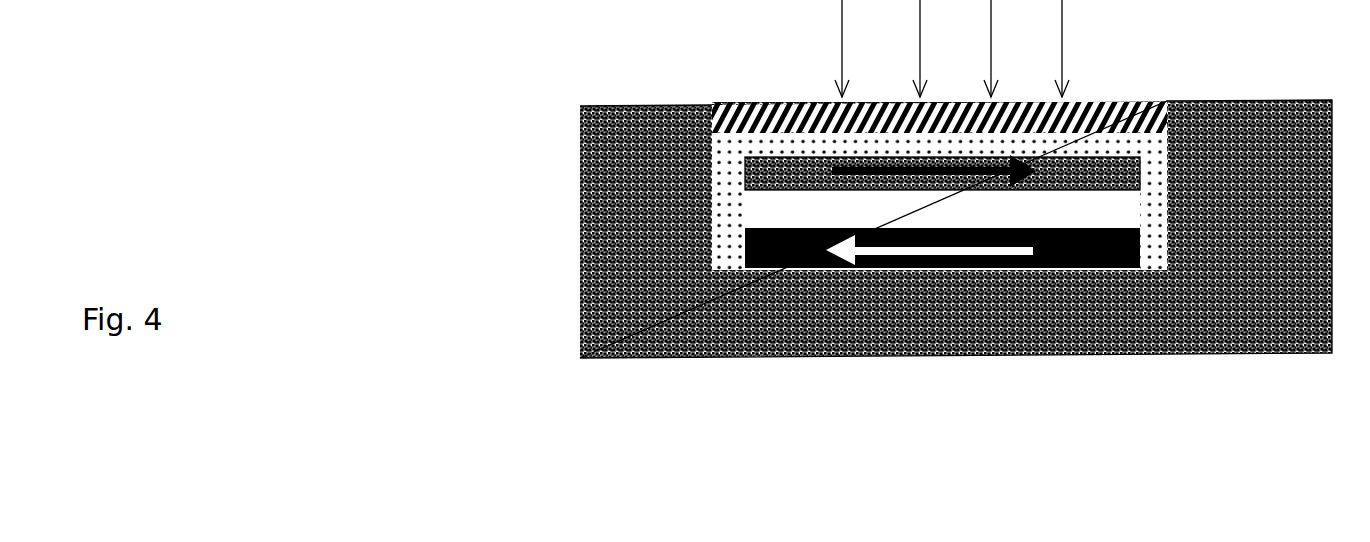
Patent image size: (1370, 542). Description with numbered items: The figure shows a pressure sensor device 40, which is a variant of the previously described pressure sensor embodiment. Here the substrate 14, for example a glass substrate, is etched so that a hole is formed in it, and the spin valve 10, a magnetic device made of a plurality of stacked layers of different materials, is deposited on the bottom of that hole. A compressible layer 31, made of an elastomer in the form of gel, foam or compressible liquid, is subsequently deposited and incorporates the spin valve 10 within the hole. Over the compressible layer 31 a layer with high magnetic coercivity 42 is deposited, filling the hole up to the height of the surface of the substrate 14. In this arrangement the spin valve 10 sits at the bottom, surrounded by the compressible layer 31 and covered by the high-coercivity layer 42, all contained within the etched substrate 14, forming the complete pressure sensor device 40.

The pressure sensor device 40 is at (369, 183).
The substrate 14 is at (545, 0).
The layer with high magnetic coercivity 42 is at (713, 121).
The compressible layer 31 is at (717, 180).
The spin valve 10 is at (1150, 205).